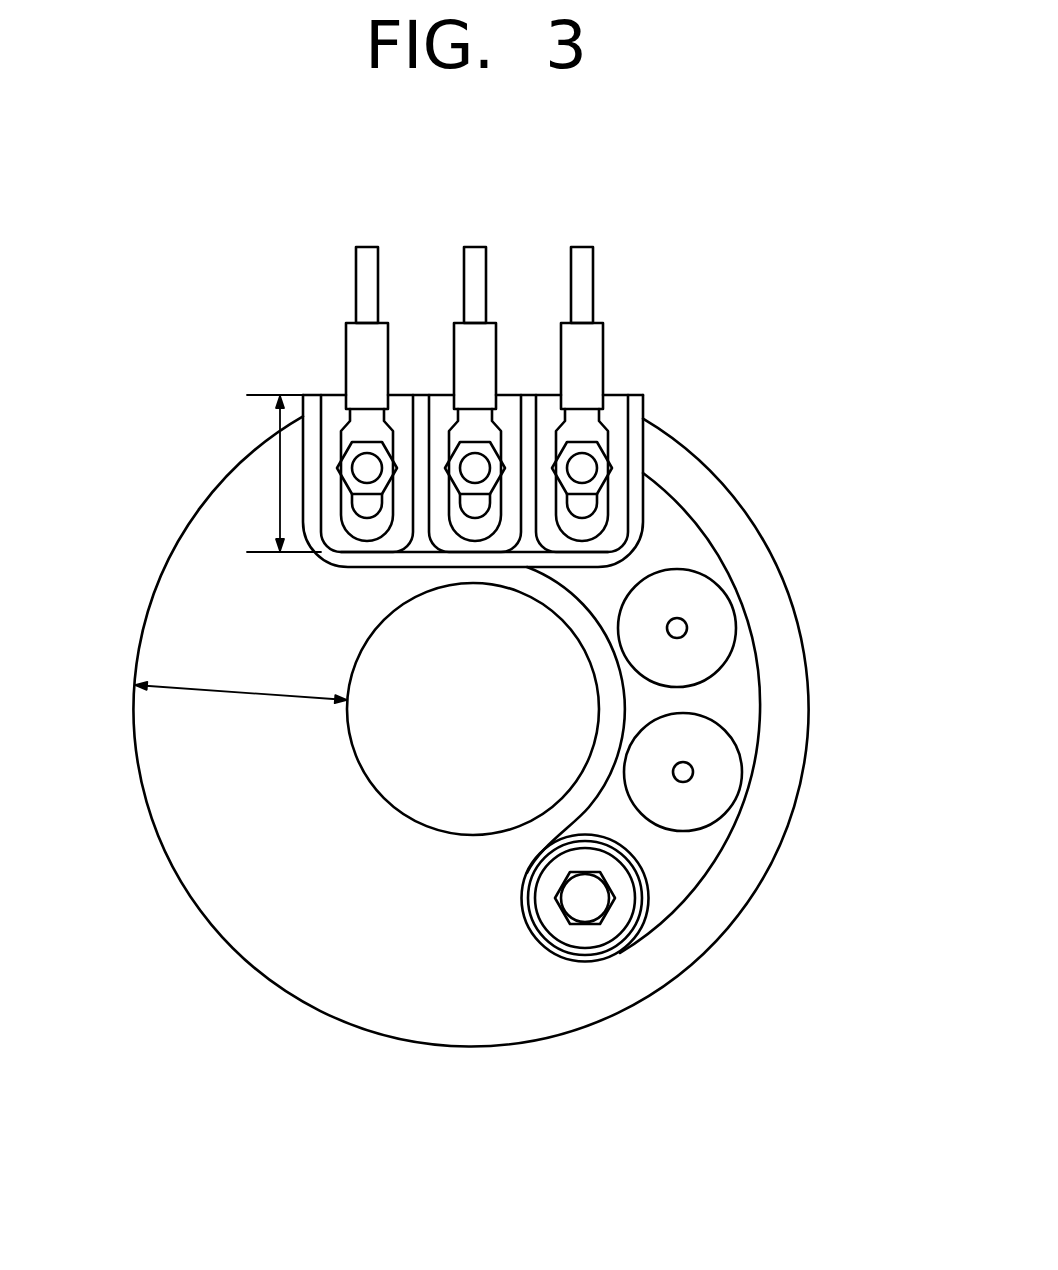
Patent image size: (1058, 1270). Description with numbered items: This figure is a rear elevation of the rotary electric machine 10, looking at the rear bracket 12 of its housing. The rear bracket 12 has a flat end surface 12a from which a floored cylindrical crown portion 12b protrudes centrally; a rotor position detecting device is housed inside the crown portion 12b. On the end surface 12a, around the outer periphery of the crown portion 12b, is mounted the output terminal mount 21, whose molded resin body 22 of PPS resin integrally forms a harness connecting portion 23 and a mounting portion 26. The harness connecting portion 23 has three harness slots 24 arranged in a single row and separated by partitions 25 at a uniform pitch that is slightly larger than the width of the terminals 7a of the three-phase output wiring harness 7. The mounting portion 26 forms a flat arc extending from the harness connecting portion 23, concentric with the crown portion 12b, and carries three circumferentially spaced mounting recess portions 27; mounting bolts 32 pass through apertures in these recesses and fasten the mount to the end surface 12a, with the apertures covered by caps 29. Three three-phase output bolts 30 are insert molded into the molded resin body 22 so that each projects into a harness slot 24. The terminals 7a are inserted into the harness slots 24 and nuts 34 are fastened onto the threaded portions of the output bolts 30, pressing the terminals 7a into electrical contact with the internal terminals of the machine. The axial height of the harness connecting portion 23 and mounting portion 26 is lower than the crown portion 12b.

The three-phase output wiring harness 7 is at (367, 247).
The terminals 7a is at (350, 433).
The rotary electric machine 10 is at (138, 264).
The rear bracket 12 is at (189, 520).
The end surface 12a is at (192, 852).
The crown portion 12b is at (413, 773).
The output terminal mount 21 is at (757, 640).
The molded resin body 22 is at (885, 400).
The harness connecting portion 23 is at (646, 452).
The harness slots 24 is at (340, 403).
The partitions 25 is at (420, 407).
The mounting portion 26 is at (701, 526).
The mounting recess portions 27 is at (563, 923).
The caps 29 is at (720, 777).
The three-phase output bolts 30 is at (643, 412).
The mounting bolts 32 is at (613, 912).
The nuts 34 is at (587, 463).